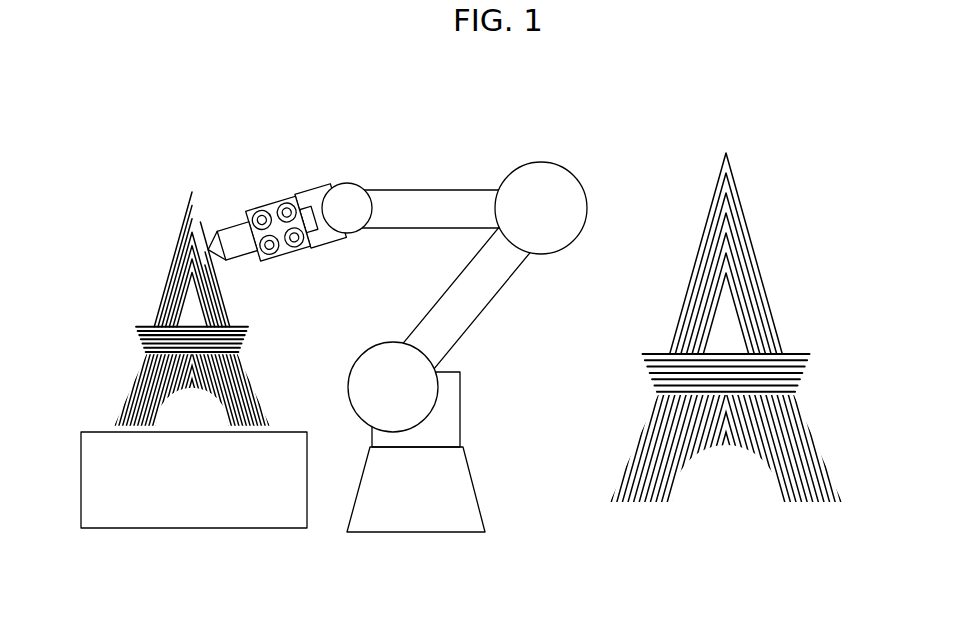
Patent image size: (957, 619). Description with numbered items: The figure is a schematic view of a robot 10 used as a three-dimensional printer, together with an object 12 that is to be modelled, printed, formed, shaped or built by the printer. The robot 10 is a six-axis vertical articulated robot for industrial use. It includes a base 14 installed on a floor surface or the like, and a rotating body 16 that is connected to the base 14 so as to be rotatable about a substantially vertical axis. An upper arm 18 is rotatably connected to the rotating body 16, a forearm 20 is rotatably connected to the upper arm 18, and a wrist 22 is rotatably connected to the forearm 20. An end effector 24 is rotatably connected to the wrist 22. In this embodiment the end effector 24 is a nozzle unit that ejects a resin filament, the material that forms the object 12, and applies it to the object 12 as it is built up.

The robot 10 is at (372, 158).
The object 12 is at (146, 276).
The base 14 is at (478, 500).
The rotating body 16 is at (461, 412).
The upper arm 18 is at (494, 301).
The forearm 20 is at (414, 189).
The wrist 22 is at (331, 256).
The end effector 24 is at (260, 198).